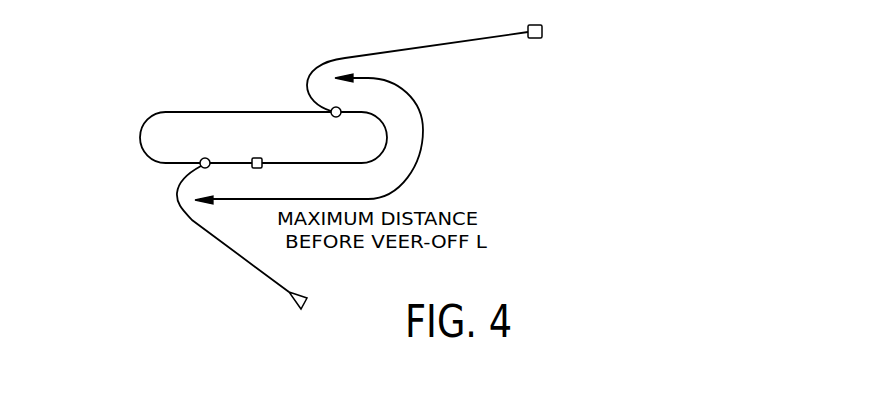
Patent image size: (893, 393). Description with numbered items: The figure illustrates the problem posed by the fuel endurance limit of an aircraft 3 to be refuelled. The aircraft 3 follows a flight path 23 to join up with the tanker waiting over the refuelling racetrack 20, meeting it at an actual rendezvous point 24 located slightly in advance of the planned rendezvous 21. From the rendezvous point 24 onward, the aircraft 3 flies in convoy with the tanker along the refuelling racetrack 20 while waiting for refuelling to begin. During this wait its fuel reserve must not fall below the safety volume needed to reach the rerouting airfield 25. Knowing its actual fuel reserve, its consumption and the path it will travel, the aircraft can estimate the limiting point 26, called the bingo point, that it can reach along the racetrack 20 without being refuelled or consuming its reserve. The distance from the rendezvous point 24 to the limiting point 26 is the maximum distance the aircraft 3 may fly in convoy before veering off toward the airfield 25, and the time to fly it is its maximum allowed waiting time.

The refuelling racetrack 20 is at (140, 145).
The planned rendezvous 21 is at (261, 157).
The flight path 23 is at (216, 239).
The rendezvous point 24 is at (207, 157).
The airfield 25 is at (535, 39).
The limiting point 26 is at (338, 118).
The aircraft 3 is at (307, 297).